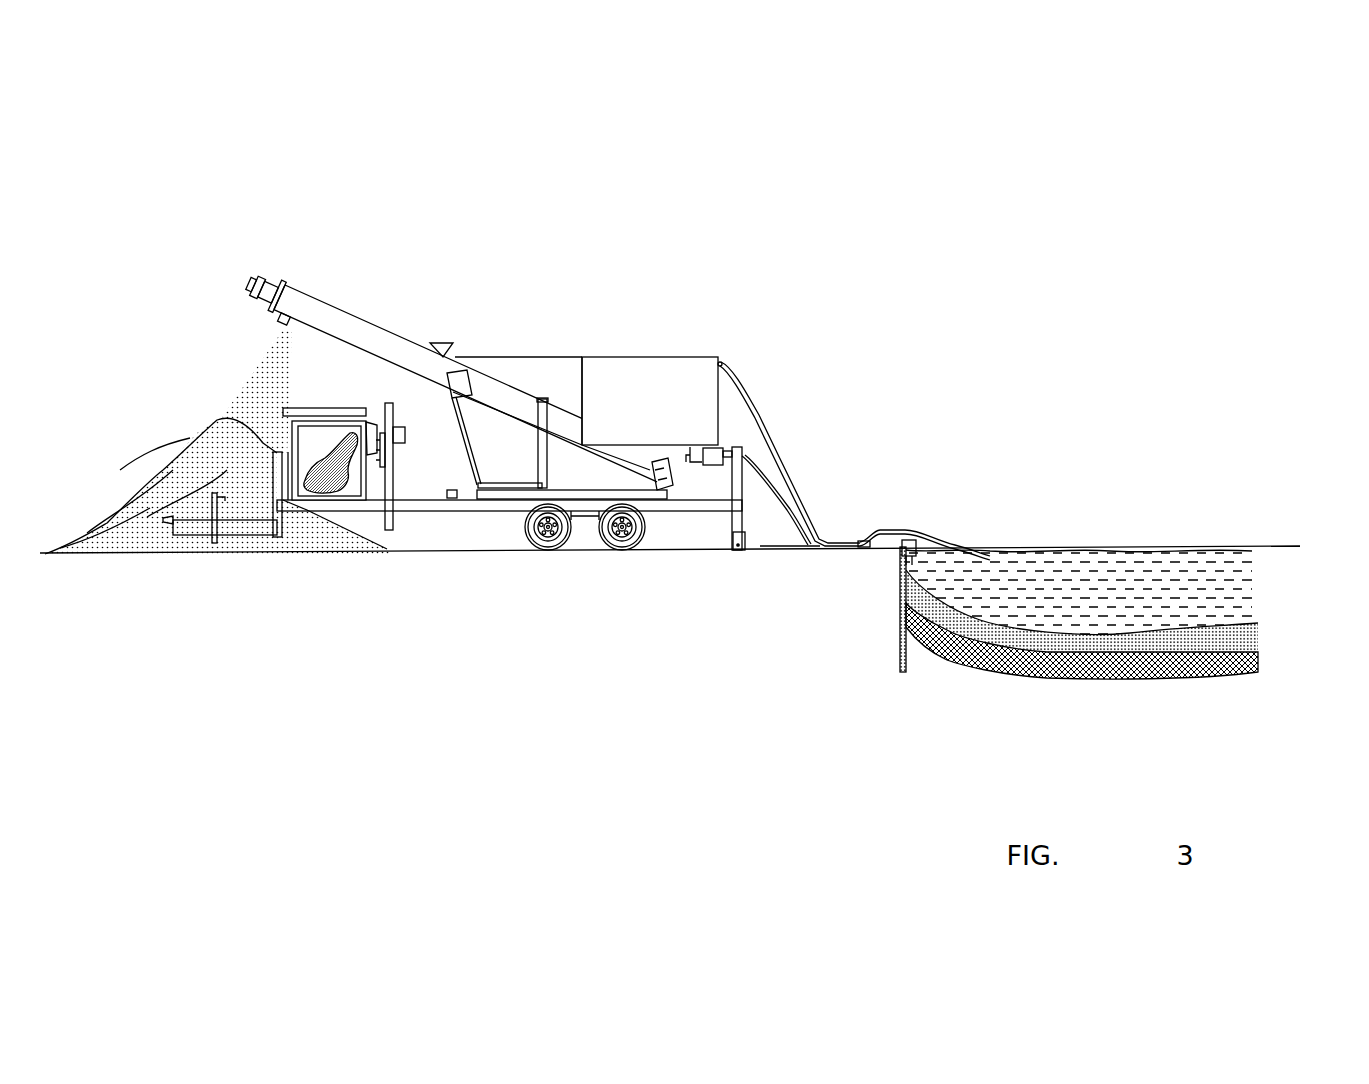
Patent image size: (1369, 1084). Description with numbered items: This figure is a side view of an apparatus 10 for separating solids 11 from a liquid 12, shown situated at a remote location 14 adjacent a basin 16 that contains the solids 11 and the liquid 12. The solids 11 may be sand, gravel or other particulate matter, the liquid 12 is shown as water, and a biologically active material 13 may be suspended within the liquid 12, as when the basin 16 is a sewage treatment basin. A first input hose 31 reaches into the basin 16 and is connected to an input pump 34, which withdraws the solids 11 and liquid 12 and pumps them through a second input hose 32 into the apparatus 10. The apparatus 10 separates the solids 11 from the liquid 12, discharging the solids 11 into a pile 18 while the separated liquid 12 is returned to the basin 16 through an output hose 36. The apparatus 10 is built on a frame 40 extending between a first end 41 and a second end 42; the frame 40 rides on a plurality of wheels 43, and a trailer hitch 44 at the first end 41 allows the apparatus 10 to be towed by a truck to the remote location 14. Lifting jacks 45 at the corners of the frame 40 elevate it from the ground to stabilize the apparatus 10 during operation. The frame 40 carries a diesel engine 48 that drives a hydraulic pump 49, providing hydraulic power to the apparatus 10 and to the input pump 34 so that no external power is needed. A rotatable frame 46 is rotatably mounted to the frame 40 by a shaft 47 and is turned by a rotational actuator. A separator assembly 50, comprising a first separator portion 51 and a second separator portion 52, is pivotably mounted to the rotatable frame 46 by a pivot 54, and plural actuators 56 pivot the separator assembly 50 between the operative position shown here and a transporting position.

The apparatus 10 is at (737, 208).
The solids 11 is at (260, 368).
The liquid 12 is at (1210, 593).
The biologically active material 13 is at (1060, 575).
The remote location 14 is at (1068, 335).
The basin 16 is at (1243, 438).
The pile 18 is at (148, 493).
The first input hose 31 is at (919, 552).
The second input hose 32 is at (797, 490).
The input pump 34 is at (863, 533).
The output hose 36 is at (771, 513).
The frame 40 is at (497, 507).
The first end 41 is at (292, 507).
The second end 42 is at (720, 507).
The wheels 43 is at (607, 547).
The trailer hitch 44 is at (175, 513).
The lifting jacks 45 is at (283, 540).
The rotatable frame 46 is at (577, 493).
The shaft 47 is at (640, 557).
The diesel engine 48 is at (322, 410).
The hydraulic pump 49 is at (357, 478).
The separator assembly 50 is at (650, 357).
The first separator portion 51 is at (687, 374).
The second separator portion 52 is at (336, 322).
The pivot 54 is at (663, 447).
The actuators 56 is at (470, 452).